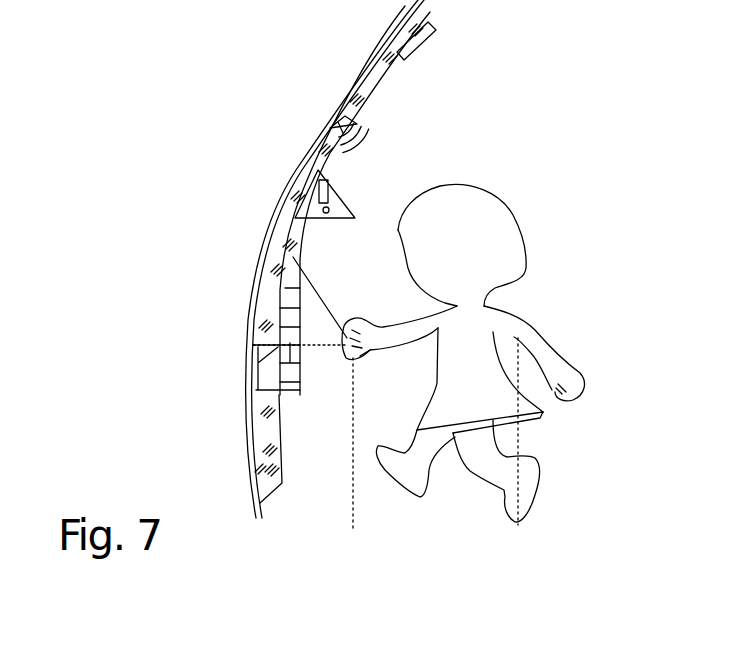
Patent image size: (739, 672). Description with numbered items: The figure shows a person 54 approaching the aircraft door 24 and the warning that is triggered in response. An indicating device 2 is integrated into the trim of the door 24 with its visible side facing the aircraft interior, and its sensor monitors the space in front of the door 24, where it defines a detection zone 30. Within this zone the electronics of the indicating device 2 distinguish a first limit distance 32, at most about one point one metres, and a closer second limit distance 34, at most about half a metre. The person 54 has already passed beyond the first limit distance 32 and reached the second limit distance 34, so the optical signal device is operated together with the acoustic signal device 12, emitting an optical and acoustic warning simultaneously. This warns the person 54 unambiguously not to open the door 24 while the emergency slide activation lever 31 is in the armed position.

The indicating device 2 is at (272, 282).
The acoustic signal device 12 is at (327, 120).
The aircraft door 24 is at (368, 50).
The detection zone 30 is at (325, 421).
The emergency slide activation lever 31 is at (303, 228).
The first limit distance 32 is at (522, 447).
The second limit distance 34 is at (313, 447).
The person 54 is at (490, 232).